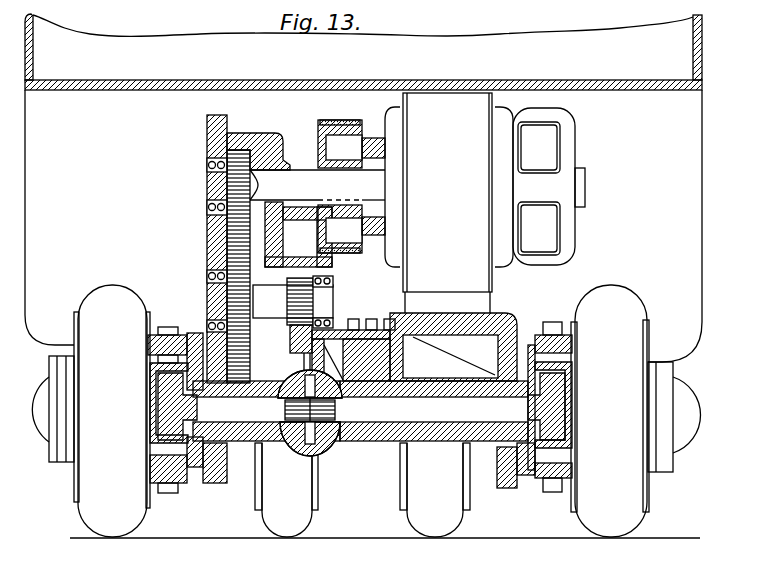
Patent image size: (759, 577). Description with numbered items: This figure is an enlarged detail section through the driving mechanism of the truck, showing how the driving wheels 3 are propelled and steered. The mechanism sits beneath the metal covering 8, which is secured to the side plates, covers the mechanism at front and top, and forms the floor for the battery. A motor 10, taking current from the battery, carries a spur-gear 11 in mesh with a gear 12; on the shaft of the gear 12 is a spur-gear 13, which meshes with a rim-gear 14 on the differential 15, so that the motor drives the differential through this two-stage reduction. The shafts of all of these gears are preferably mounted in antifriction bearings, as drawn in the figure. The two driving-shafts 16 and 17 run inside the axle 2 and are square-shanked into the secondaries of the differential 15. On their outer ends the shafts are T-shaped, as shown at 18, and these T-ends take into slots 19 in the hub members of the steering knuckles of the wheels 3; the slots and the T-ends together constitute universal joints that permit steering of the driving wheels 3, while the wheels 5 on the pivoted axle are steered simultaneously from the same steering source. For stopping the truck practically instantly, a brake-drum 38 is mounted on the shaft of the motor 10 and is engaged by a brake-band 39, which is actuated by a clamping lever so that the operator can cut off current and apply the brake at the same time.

The axle 2 is at (241, 442).
The driving wheels 3 is at (361, 411).
The wheels 5 is at (268, 519).
The metal covering 8 is at (363, 243).
The motor 10 is at (400, 193).
The spur-gear 11 is at (240, 179).
The gear 12 is at (238, 259).
The spur-gear 13 is at (308, 303).
The rim-gear 14 is at (296, 348).
The differential 15 is at (293, 450).
The driving-shaft 16 is at (266, 411).
The driving-shaft 17 is at (423, 400).
The T-shaped end 18 is at (158, 378).
The slot 19 is at (153, 428).
The brake-drum 38 is at (318, 128).
The brake-band 39 is at (343, 118).